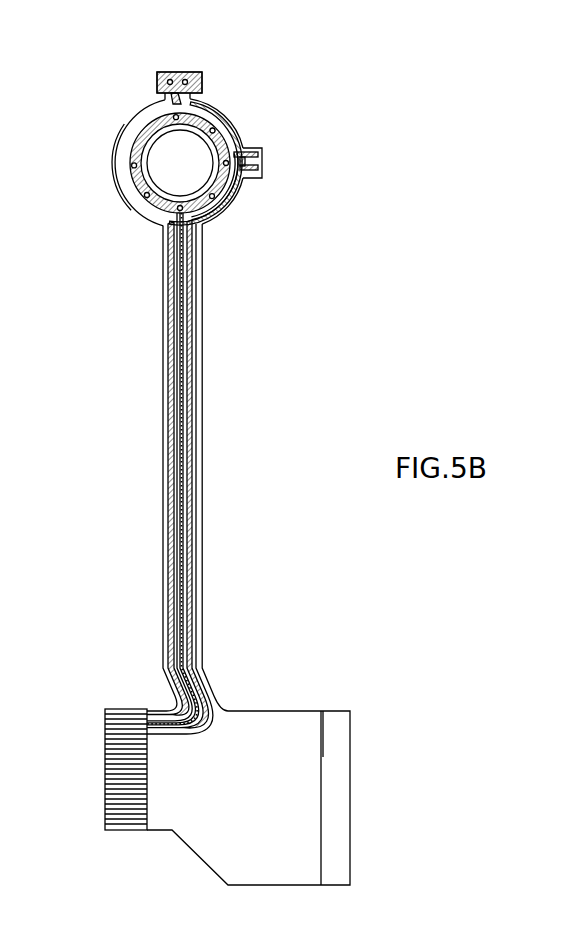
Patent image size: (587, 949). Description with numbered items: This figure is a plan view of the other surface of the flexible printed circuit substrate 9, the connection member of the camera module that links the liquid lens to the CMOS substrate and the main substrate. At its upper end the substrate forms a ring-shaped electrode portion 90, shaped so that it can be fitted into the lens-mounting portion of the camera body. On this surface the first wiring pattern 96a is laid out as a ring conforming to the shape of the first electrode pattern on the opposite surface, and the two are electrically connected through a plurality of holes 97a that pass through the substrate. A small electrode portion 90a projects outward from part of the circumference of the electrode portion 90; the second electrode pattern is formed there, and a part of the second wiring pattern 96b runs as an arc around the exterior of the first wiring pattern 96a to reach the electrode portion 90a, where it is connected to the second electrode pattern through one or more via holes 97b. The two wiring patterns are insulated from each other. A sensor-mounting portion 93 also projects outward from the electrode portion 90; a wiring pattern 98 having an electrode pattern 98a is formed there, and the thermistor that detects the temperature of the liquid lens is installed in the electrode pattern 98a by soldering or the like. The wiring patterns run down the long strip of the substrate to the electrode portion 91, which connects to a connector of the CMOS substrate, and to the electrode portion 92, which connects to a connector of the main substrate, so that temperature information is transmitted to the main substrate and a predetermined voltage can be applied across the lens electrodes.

The flexible printed circuit substrate 9 is at (204, 290).
The ring-shaped electrode portion 90 is at (238, 205).
The electrode portion 90a is at (164, 71).
The electrode portion 91 is at (104, 731).
The electrode portion 92 is at (361, 807).
The sensor-mounting portion 93 is at (249, 148).
The first wiring pattern 96a is at (149, 222).
The second wiring pattern 96b is at (128, 130).
The holes 97a is at (215, 127).
The via holes 97b is at (192, 72).
The wiring pattern 98 is at (199, 394).
The electrode pattern 98a is at (262, 164).